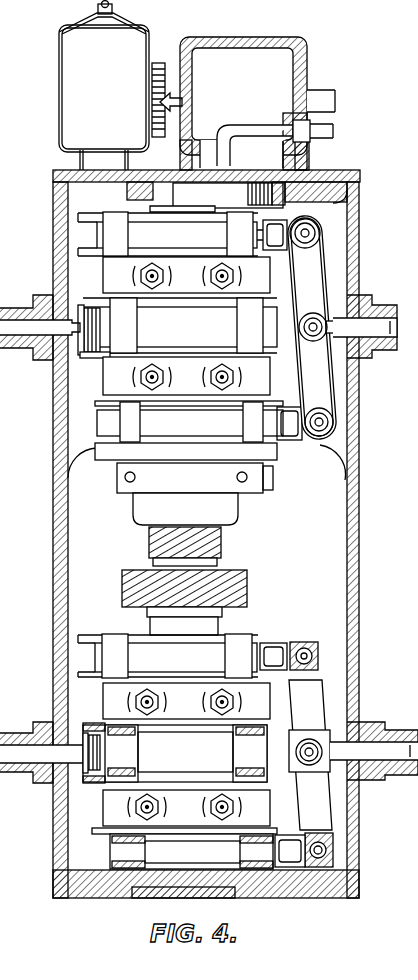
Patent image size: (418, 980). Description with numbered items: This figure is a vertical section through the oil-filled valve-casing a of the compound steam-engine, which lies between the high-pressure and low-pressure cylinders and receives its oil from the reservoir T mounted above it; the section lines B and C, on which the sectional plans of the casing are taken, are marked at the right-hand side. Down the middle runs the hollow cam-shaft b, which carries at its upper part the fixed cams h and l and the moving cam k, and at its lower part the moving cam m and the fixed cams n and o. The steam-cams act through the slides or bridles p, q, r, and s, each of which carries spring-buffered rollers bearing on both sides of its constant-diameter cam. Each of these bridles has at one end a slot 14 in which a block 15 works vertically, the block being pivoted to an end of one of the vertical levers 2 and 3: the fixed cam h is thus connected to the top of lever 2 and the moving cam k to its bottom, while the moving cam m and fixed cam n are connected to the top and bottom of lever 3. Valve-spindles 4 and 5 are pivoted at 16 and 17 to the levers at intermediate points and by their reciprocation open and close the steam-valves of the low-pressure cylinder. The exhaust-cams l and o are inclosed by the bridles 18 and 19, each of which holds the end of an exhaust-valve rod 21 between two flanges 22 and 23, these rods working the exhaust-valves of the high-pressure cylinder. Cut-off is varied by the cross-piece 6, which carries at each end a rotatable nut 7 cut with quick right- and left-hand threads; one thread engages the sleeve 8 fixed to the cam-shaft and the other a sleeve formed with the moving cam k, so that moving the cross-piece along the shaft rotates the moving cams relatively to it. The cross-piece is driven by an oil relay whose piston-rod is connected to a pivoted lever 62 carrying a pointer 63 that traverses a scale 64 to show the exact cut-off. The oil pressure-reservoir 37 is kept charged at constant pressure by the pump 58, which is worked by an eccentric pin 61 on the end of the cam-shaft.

The vertical lever 2 is at (312, 327).
The vertical lever 3 is at (310, 755).
The valve-spindle 4 is at (380, 352).
The valve-spindle 5 is at (388, 772).
The cross-piece 6 is at (195, 494).
The nut 7 is at (158, 463).
The sleeve 8 is at (221, 546).
The slot 14 is at (308, 646).
The block 15 is at (312, 654).
The pivot 16 is at (320, 318).
The pivot 17 is at (313, 740).
The bridle 18 is at (90, 358).
The bridle 19 is at (90, 727).
The exhaust-valve rod 21 is at (30, 338).
The flange 22 is at (80, 310).
The flange 23 is at (100, 322).
The oil pressure-reservoir 37 is at (256, 103).
The pump 58 is at (214, 185).
The eccentric pin 61 is at (178, 212).
The pivoted lever 62 is at (322, 93).
The pointer 63 is at (174, 96).
The scale 64 is at (160, 62).
The reservoir T is at (104, 86).
The fixed cam h is at (182, 234).
The fixed cam l is at (180, 325).
The moving cam k is at (195, 422).
The moving cam m is at (168, 656).
The fixed cam o is at (175, 753).
The fixed cam n is at (184, 848).
The bridle p is at (290, 224).
The bridle q is at (305, 440).
The bridle r is at (280, 645).
The bridle s is at (290, 851).
The cam-shaft b is at (215, 629).
The valve-casing a is at (359, 240).
The section line B is at (417, 211).
The section line C is at (417, 456).